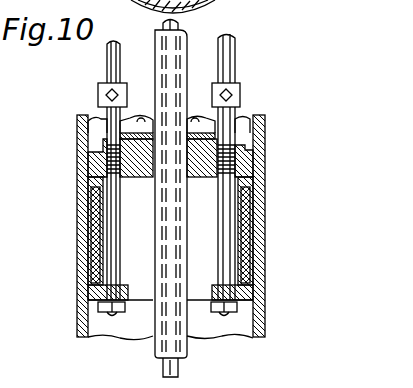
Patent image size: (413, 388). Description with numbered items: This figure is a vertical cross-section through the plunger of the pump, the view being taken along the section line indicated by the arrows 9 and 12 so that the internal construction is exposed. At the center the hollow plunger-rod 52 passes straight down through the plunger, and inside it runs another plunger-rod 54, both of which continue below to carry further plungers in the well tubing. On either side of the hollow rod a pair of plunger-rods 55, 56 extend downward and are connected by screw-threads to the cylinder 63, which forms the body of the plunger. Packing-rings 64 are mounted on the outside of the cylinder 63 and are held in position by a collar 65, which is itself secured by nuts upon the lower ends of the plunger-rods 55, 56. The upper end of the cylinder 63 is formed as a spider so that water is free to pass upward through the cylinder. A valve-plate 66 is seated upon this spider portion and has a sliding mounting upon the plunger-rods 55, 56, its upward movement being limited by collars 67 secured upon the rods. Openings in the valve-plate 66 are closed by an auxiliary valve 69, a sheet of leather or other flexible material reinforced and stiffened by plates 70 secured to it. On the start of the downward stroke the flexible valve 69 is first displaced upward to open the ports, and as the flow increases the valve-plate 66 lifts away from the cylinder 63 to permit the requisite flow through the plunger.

The section line 9- 9 is at (270, 57).
The section line 12- 12 is at (294, 328).
The hollow plunger-rod 52 is at (172, 94).
The plunger-rod 54 is at (181, 26).
The plunger-rod 55 is at (138, 38).
The plunger-rod 56 is at (236, 52).
The cylinder 63 is at (266, 175).
The packing-rings 64 is at (95, 211).
The collar 65 is at (258, 297).
The valve-plate 66 is at (100, 168).
The collars 67 is at (98, 95).
The auxiliary valve 69 is at (118, 135).
The plates 70 is at (133, 116).